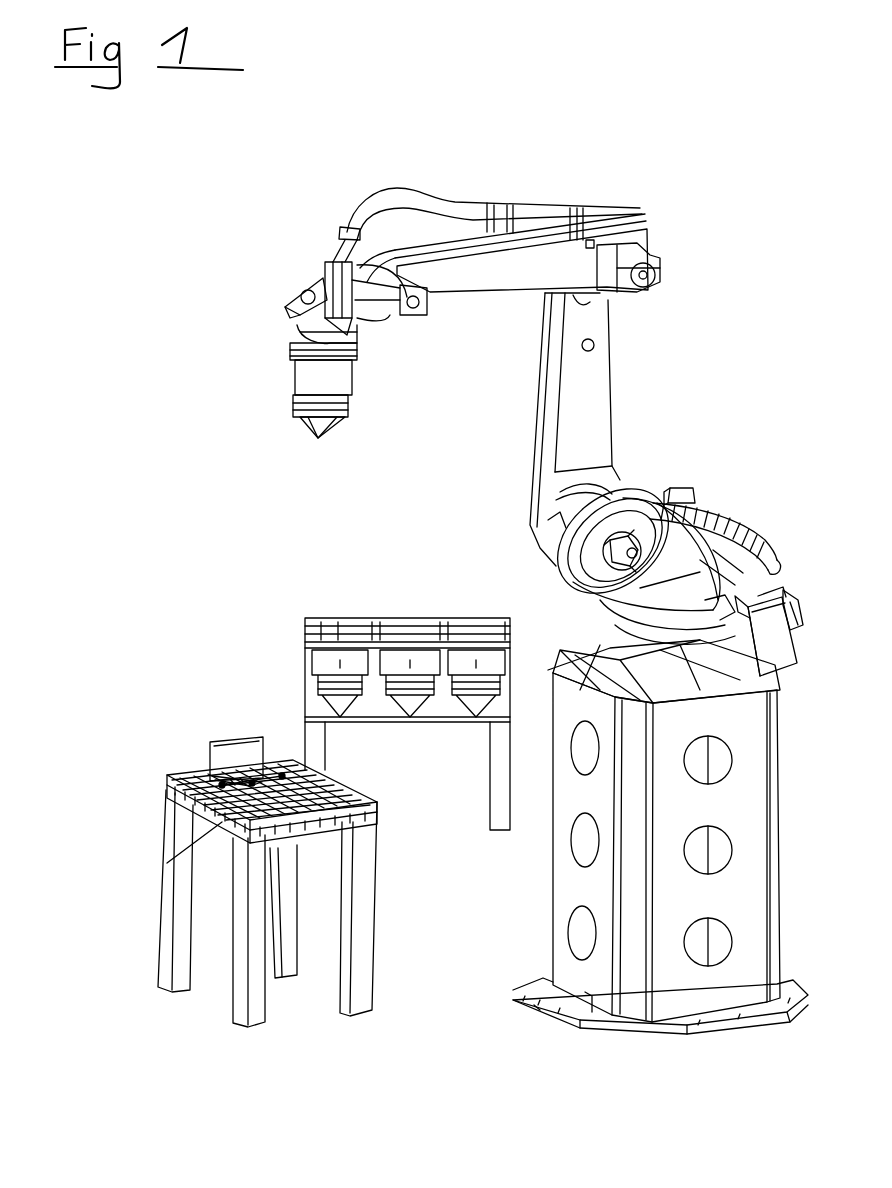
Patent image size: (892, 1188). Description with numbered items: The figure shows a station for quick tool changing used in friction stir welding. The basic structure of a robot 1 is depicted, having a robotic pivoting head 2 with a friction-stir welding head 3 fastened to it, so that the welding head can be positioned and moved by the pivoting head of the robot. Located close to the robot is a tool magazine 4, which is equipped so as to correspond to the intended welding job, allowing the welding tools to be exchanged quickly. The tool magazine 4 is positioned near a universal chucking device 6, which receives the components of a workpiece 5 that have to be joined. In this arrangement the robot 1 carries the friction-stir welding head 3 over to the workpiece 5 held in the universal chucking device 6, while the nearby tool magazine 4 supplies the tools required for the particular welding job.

The robot 1 is at (585, 413).
The robotic pivoting head 2 is at (358, 330).
The friction-stir welding head 3 is at (305, 378).
The tool magazine 4 is at (305, 660).
The workpiece 5 is at (226, 747).
The universal chucking device 6 is at (173, 812).